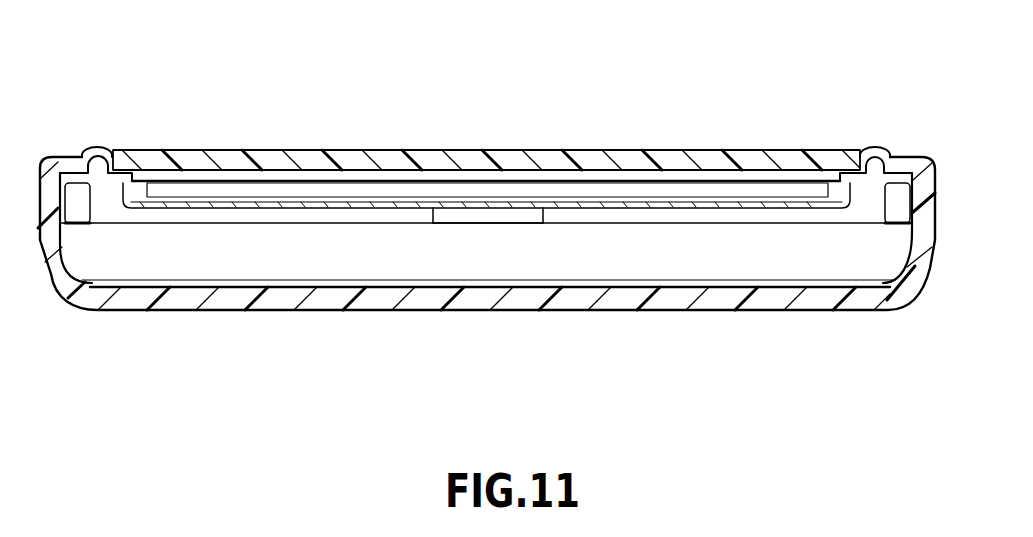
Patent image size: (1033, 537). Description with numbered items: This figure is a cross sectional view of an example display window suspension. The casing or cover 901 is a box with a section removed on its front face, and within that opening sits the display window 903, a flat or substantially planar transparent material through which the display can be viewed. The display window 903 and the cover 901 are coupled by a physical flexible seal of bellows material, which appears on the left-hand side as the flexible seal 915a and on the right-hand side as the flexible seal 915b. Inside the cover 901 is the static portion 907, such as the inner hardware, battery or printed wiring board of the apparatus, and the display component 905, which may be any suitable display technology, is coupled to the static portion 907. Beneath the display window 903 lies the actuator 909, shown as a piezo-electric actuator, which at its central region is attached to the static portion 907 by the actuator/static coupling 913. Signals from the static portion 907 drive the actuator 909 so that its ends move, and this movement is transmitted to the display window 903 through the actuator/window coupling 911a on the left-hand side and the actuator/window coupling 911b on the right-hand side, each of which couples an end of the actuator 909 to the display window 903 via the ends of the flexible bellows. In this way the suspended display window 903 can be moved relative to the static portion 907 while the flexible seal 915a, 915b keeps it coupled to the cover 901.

The casing or cover 901 is at (216, 311).
The display window 903 is at (355, 152).
The display component 905 is at (470, 190).
The static portion 907 is at (655, 257).
The actuator 909 is at (398, 206).
The actuator/window coupling 911a is at (120, 224).
The actuator/window coupling 911b is at (852, 217).
The actuator/static coupling 913 is at (483, 215).
The flexible seal 915a is at (98, 149).
The flexible seal 915b is at (876, 149).